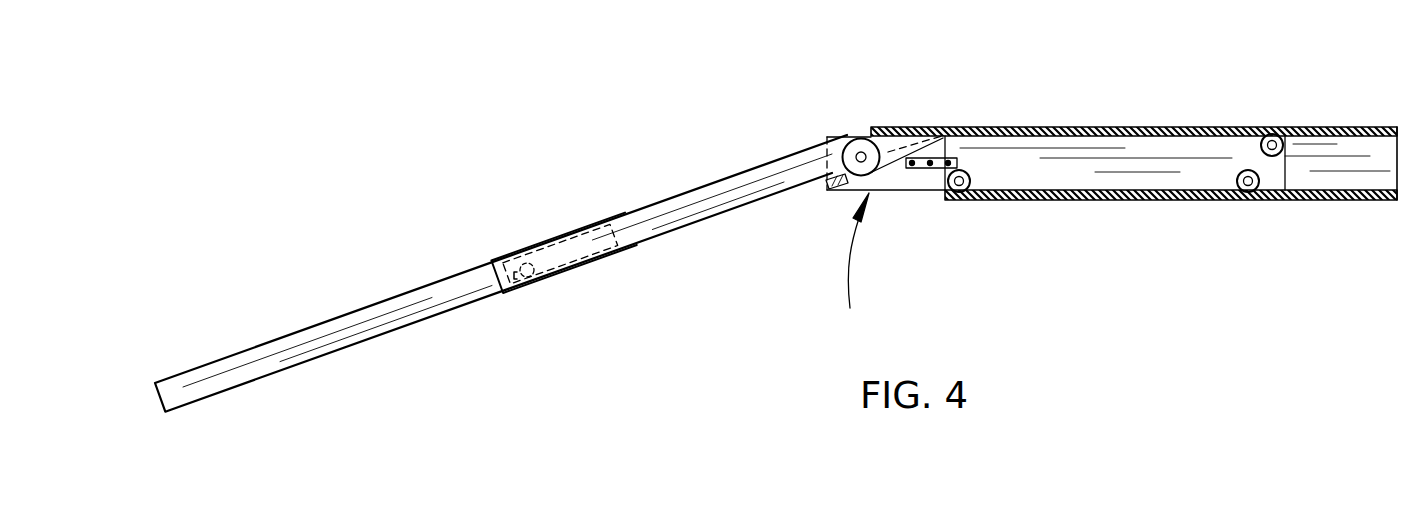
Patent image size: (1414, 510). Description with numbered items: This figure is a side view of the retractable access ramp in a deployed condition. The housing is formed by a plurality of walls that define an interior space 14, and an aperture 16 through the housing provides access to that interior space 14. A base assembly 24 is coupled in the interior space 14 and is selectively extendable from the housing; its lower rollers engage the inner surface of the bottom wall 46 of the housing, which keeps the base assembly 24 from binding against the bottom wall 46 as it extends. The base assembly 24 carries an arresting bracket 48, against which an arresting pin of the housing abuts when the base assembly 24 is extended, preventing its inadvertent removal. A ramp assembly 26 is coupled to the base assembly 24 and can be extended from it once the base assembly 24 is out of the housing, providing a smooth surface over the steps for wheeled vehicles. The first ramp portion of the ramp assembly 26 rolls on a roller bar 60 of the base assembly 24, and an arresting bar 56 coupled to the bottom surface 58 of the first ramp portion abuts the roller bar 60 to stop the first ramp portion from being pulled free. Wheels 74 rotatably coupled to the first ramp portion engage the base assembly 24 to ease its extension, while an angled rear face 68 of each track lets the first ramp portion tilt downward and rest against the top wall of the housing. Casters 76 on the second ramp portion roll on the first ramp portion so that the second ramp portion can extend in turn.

The interior space 14 is at (1077, 162).
The aperture 16 is at (972, 152).
The base assembly 24 is at (851, 266).
The ramp assembly 26 is at (313, 418).
The bottom wall 46 is at (1152, 198).
The arresting bracket 48 is at (915, 170).
The arresting bar 56 is at (842, 189).
The bottom surface 58 is at (662, 243).
The roller bar 60 is at (828, 190).
The rear face 68 is at (971, 127).
The wheels 74 is at (849, 138).
The casters 76 is at (527, 280).